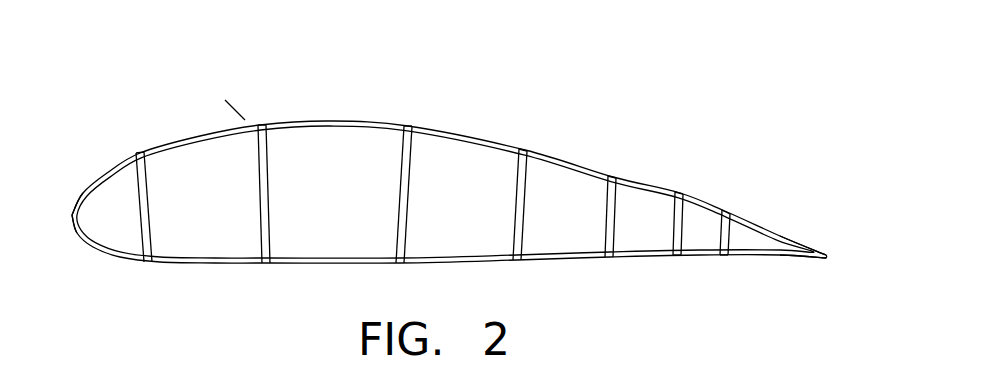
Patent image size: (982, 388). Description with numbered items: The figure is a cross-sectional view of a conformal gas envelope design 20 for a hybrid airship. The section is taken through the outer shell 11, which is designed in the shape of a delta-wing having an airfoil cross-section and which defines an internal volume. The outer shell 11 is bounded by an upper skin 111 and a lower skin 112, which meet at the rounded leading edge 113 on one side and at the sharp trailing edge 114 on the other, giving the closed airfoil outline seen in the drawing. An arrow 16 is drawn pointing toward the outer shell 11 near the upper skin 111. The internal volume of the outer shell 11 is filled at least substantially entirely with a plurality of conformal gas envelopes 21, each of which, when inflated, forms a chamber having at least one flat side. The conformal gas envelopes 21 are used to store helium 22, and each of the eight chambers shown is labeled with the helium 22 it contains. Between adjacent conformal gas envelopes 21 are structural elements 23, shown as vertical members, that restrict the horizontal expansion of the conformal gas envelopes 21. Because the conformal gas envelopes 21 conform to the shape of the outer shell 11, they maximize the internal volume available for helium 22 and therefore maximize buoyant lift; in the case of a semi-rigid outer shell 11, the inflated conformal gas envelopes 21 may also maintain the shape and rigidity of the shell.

The conformal gas envelope design 20 is at (445, 172).
The outer shell 11 is at (445, 197).
The upper skin 111 is at (330, 122).
The lower skin 112 is at (313, 263).
The leading edge 113 is at (73, 226).
The trailing edge 114 is at (828, 258).
The direction arrow 16 is at (246, 118).
The conformal gas envelope 21 is at (135, 195).
The helium 22 is at (123, 226).
The structural element 23 is at (140, 158).